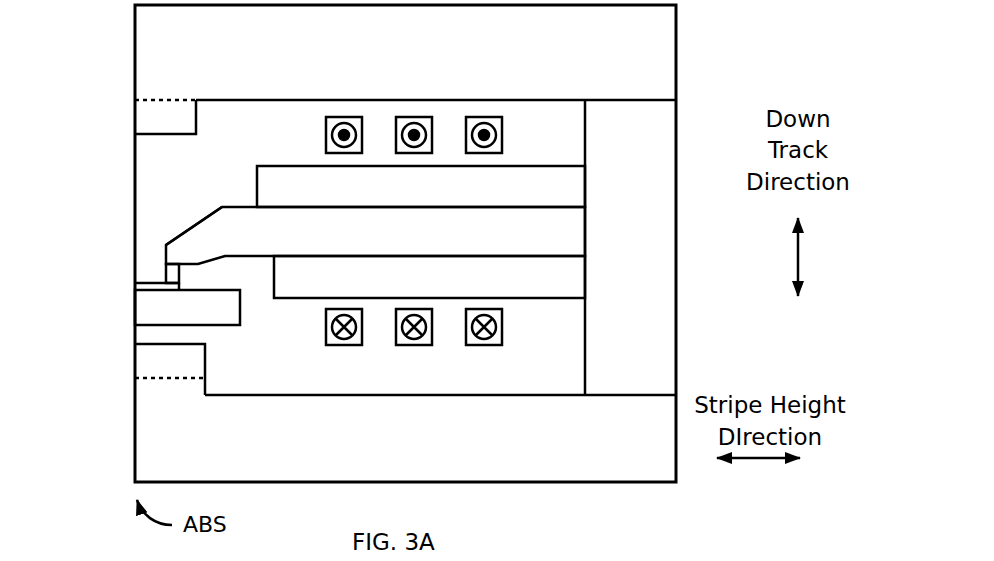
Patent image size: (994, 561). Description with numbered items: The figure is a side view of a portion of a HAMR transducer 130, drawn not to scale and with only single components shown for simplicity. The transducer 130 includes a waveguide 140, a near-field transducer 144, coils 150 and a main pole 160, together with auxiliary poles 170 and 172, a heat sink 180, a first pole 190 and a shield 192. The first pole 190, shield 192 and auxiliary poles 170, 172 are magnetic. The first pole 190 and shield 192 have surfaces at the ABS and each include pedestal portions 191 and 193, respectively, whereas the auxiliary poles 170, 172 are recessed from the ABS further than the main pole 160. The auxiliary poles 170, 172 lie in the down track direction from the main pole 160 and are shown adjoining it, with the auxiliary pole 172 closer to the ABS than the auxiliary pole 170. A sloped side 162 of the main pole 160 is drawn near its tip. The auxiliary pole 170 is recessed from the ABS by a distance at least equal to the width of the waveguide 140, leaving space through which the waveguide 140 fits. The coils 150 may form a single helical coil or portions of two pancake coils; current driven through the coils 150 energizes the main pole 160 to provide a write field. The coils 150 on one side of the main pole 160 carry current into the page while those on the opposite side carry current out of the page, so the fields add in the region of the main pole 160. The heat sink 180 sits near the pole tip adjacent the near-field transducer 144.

The HAMR transducer 130 is at (70, 14).
The shield 192 is at (436, 60).
The pedestal portion 193 is at (128, 124).
The auxiliary pole 172 is at (421, 186).
The main pole 160 is at (375, 235).
The sloped side of main pole 162 is at (184, 216).
The auxiliary pole 170 is at (429, 277).
The heat sink 180 is at (165, 272).
The near-field transducer 144 is at (135, 283).
The waveguide 140 is at (135, 317).
The coils 150 is at (535, 136).
The first pole 190 is at (440, 429).
The pedestal portion 191 is at (124, 364).